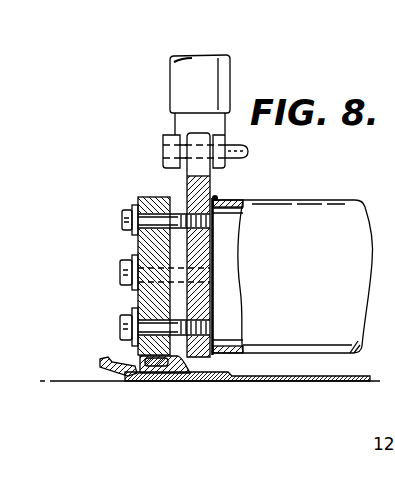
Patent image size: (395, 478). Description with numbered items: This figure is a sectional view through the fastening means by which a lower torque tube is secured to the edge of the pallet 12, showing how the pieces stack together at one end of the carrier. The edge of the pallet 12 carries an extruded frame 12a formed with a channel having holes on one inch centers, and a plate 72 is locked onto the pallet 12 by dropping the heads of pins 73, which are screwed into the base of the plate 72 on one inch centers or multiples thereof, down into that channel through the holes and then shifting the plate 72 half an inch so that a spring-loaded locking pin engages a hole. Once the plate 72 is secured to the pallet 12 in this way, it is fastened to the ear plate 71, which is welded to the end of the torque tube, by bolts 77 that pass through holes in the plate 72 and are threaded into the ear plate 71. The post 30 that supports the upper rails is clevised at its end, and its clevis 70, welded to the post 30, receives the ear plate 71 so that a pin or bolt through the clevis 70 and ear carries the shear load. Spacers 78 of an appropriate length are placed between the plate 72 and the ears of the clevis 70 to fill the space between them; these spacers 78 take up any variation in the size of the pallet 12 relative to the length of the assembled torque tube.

The pallet 12 is at (268, 383).
The extruded frame 12a is at (120, 380).
The post 30 is at (170, 82).
The clevis 70 is at (181, 122).
The ear plate 71 is at (187, 178).
The plate 72 is at (136, 243).
The pin 73 is at (167, 380).
The bolt 77 is at (122, 212).
The spacer 78 is at (216, 198).